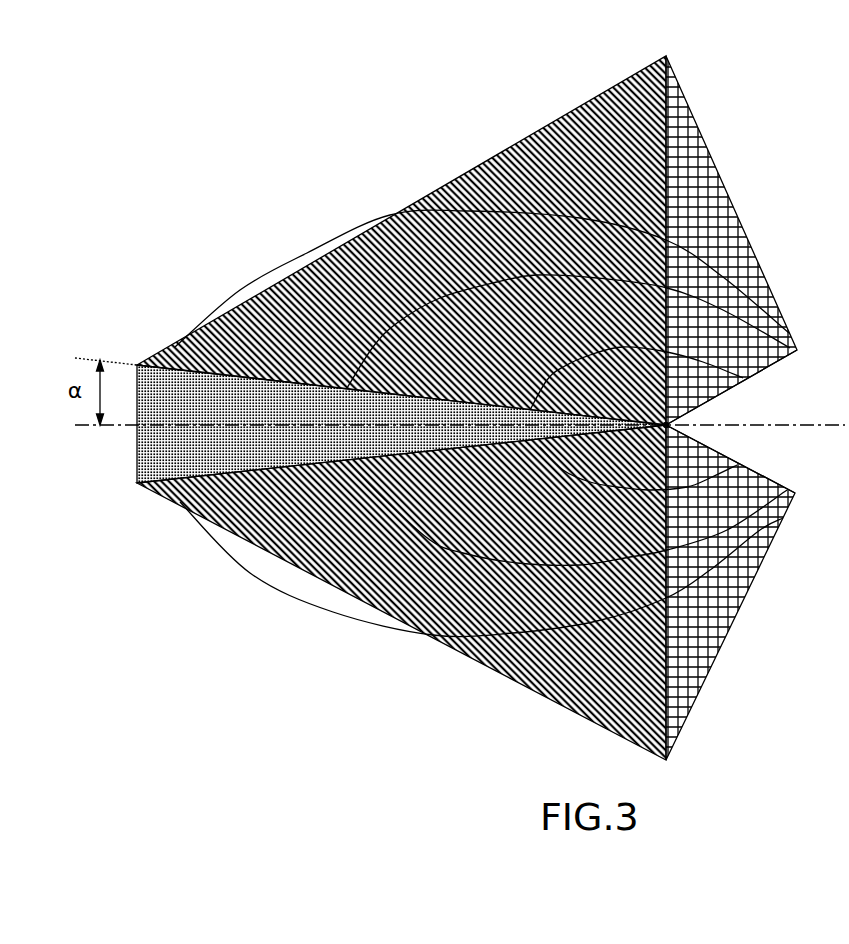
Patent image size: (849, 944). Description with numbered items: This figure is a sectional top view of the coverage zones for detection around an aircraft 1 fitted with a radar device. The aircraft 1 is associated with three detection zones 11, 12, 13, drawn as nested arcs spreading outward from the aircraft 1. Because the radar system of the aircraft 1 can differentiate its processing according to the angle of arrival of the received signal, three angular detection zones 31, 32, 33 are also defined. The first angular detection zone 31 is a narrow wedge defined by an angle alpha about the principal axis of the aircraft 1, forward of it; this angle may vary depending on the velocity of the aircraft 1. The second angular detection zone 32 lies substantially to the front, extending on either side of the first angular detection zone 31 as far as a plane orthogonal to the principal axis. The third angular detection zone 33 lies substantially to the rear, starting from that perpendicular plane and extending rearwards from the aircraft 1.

The aircraft 1 is at (688, 424).
The first detection zone 11 is at (712, 463).
The second detection zone 12 is at (517, 523).
The third detection zone 13 is at (343, 595).
The first angular detection zone 31 is at (163, 427).
The second angular detection zone 32 is at (580, 703).
The third angular detection zone 33 is at (740, 605).